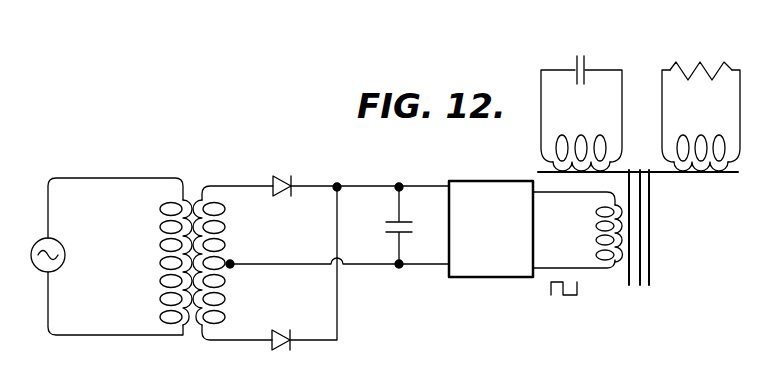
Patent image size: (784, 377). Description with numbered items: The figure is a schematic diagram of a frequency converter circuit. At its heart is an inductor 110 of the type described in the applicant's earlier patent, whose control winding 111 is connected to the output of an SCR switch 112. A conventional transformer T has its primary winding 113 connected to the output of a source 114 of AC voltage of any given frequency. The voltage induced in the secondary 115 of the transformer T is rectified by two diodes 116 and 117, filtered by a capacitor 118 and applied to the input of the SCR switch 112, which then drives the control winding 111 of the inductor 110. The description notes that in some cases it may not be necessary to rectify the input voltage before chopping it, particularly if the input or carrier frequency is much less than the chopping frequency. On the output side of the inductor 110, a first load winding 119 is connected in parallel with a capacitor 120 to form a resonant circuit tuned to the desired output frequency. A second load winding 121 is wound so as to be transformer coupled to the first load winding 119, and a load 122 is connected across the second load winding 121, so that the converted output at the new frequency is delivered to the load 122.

The inductor 110 is at (672, 182).
The control winding 111 is at (599, 251).
The SCR switch 112 is at (461, 280).
The primary winding 113 is at (160, 221).
The source of AC voltage 114 is at (38, 240).
The secondary 115 is at (225, 243).
The diode 116 is at (281, 176).
The diode 117 is at (280, 334).
The capacitor 118 is at (391, 240).
The first load winding 119 is at (580, 140).
The capacitor 120 is at (590, 56).
The second load winding 121 is at (683, 148).
The load 122 is at (712, 63).
The transformer T is at (198, 185).